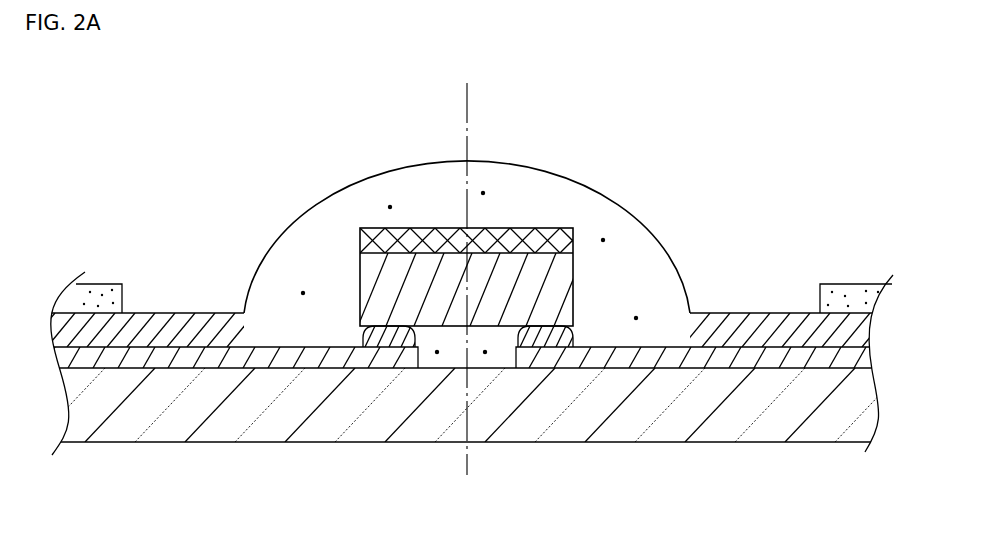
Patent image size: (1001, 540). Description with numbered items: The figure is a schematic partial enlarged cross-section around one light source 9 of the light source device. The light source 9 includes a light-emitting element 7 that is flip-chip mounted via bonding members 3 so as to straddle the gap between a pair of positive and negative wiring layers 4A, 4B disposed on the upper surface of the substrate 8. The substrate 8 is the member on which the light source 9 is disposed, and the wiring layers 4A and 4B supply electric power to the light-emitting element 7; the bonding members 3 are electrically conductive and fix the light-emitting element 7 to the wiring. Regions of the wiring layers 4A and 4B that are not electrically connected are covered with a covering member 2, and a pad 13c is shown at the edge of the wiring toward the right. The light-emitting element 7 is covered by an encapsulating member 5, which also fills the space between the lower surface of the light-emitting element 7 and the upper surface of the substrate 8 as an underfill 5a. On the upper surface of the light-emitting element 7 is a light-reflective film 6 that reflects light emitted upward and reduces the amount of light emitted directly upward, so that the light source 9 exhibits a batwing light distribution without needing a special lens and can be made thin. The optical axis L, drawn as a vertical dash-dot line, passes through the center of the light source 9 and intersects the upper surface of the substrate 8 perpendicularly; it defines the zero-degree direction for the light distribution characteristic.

The light source 9 is at (255, 205).
The optical axis L is at (467, 262).
The substrate 8 is at (855, 408).
The wiring layer 4A is at (267, 357).
The wiring layer 4B is at (757, 357).
The covering member 2 is at (787, 330).
The electrode pad 13c is at (855, 293).
The encapsulating member 5 is at (277, 273).
The underfill 5a is at (455, 353).
The light-emitting element 7 is at (390, 288).
The light-reflective film 6 is at (503, 227).
The bonding members 3 is at (546, 343).